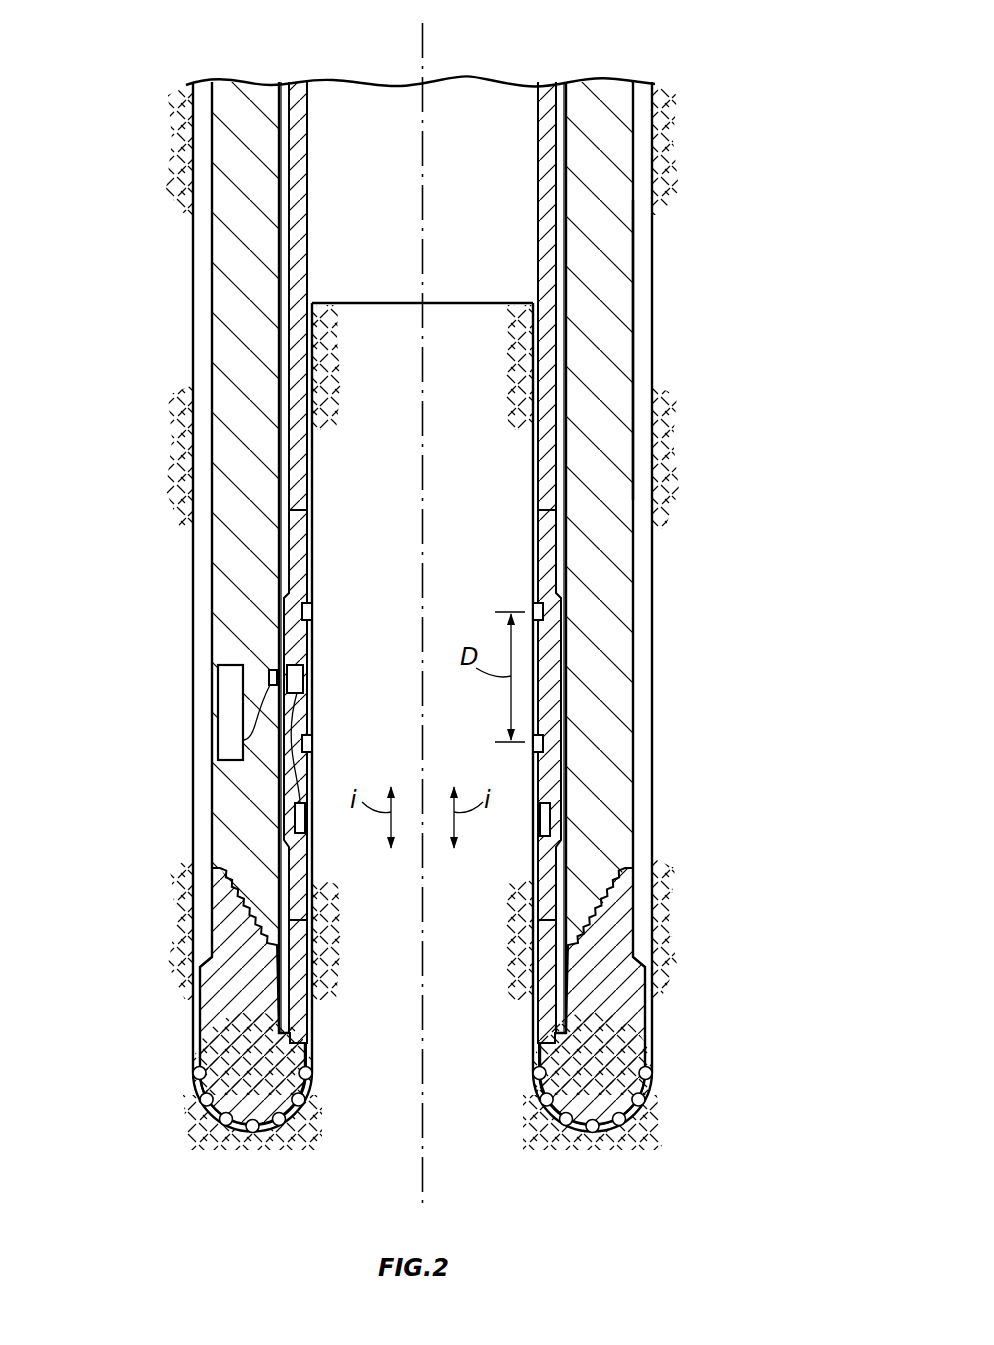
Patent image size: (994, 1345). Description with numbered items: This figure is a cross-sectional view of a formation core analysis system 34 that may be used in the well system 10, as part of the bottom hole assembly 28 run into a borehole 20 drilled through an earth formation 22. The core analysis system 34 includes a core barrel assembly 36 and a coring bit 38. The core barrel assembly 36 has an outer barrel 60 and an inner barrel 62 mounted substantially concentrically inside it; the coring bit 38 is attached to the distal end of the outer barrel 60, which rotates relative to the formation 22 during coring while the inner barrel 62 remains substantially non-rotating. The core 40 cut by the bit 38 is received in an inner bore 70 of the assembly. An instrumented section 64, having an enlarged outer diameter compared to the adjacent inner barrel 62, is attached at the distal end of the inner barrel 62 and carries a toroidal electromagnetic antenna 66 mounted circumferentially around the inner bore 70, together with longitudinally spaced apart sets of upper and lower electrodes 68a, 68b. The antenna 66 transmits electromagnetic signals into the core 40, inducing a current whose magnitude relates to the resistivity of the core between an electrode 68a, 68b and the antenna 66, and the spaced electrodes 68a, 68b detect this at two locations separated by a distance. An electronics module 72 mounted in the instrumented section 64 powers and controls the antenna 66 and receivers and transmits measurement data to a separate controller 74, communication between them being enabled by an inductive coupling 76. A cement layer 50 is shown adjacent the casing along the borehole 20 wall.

The well system 10 is at (776, 80).
The borehole 20 is at (194, 258).
The earth formation 22 is at (95, 571).
The bottom hole assembly 28 is at (198, 124).
The formation core analysis system 34 is at (638, 350).
The core barrel assembly 36 is at (201, 783).
The coring bit 38 is at (199, 1062).
The core 40 is at (447, 302).
The cement layer 50 is at (644, 292).
The outer barrel 60 is at (212, 348).
The inner barrel 62 is at (282, 316).
The instrumented section 64 is at (563, 589).
The toroidal electromagnetic antenna 66 is at (552, 817).
The upper electrodes 68a is at (313, 612).
The lower electrodes 68b is at (313, 742).
The inner bore 70 is at (475, 120).
The electronics module 72 is at (304, 679).
The controller 74 is at (218, 690).
The inductive coupling 76 is at (268, 672).